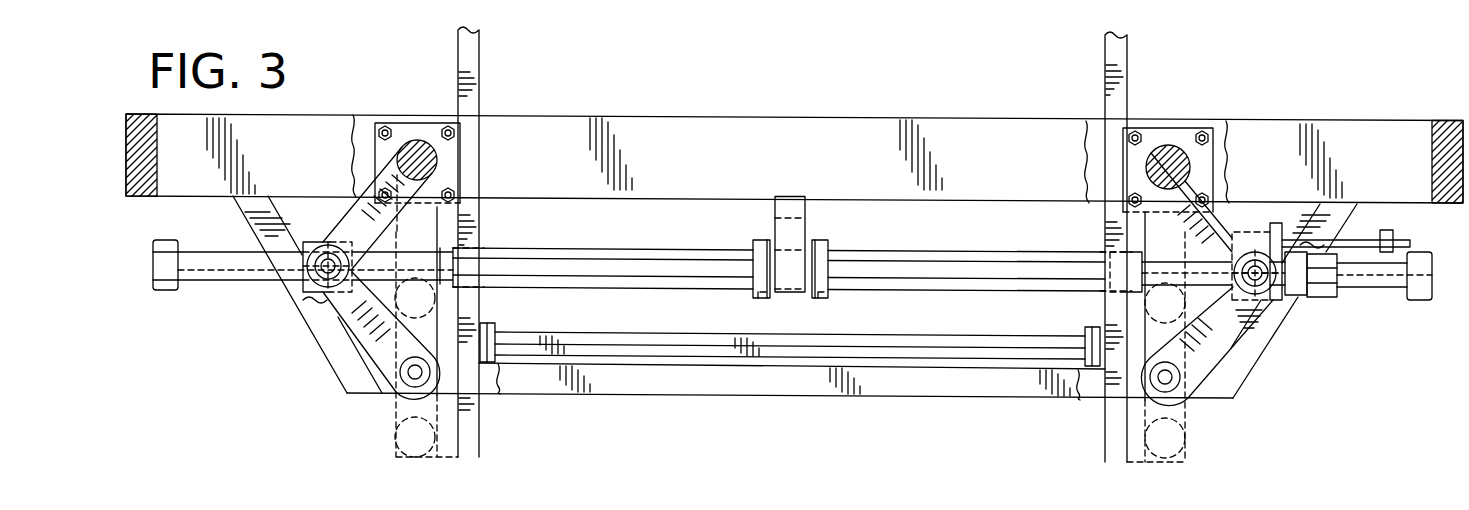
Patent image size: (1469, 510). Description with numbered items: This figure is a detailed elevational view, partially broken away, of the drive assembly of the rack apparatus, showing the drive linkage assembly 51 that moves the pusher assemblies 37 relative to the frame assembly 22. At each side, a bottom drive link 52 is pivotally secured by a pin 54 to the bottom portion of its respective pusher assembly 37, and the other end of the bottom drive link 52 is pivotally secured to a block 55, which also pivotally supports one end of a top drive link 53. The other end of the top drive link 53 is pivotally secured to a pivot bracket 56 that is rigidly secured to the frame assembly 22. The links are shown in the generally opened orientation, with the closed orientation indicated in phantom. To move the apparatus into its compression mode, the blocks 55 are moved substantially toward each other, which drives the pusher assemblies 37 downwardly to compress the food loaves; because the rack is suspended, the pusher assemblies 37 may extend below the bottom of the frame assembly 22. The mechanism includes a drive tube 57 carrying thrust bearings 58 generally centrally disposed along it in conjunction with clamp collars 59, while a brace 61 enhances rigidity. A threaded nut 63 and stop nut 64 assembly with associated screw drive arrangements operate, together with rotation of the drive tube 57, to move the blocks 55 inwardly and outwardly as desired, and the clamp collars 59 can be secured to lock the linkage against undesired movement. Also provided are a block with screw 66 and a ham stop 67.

The frame assembly 22 is at (320, 139).
The pusher assembly 37 is at (478, 392).
The drive linkage assembly 51 is at (350, 337).
The bottom drive link 52 is at (382, 337).
The top drive link 53 is at (347, 228).
The pin 54 is at (410, 388).
The block 55 is at (318, 295).
The pivot bracket 56 is at (410, 134).
The drive tube 57 is at (1000, 265).
The thrust bearing 58 is at (770, 242).
The clamp collar 59 is at (762, 294).
The brace 61 is at (718, 340).
The threaded nut 63 is at (1428, 264).
The stop nut 64 is at (1296, 298).
The block with screw 66 is at (1270, 226).
The ham stop 67 is at (1357, 233).